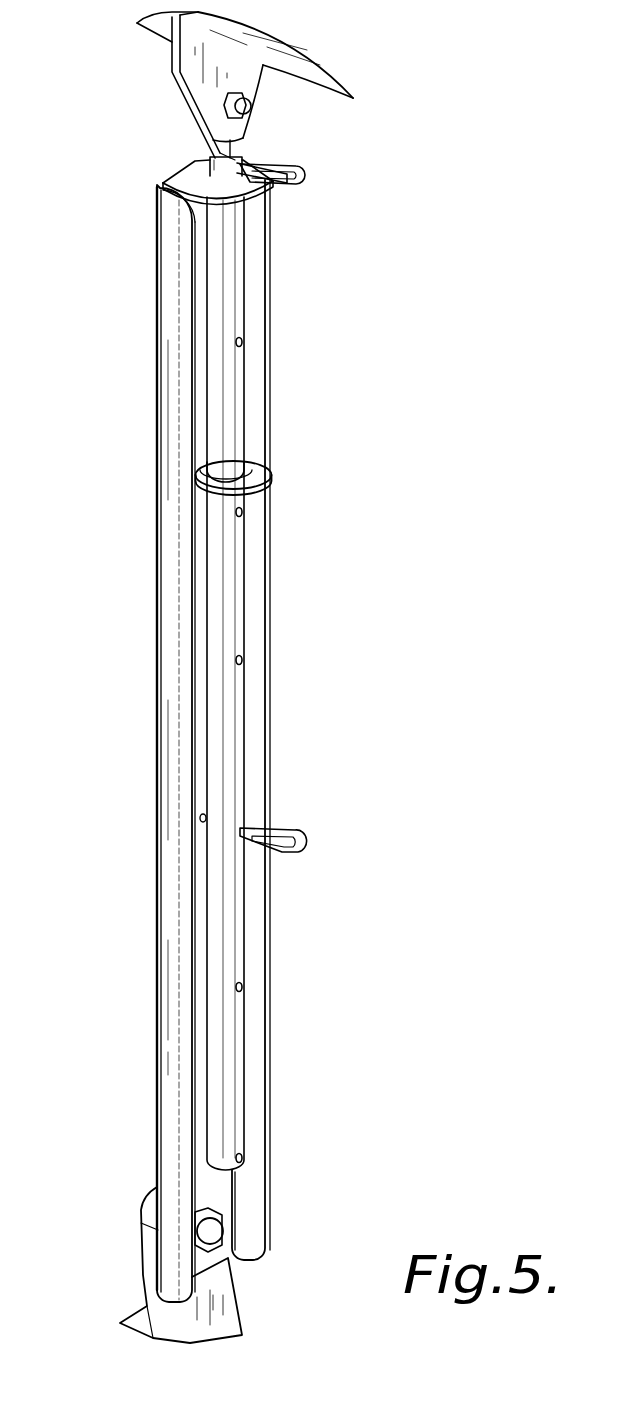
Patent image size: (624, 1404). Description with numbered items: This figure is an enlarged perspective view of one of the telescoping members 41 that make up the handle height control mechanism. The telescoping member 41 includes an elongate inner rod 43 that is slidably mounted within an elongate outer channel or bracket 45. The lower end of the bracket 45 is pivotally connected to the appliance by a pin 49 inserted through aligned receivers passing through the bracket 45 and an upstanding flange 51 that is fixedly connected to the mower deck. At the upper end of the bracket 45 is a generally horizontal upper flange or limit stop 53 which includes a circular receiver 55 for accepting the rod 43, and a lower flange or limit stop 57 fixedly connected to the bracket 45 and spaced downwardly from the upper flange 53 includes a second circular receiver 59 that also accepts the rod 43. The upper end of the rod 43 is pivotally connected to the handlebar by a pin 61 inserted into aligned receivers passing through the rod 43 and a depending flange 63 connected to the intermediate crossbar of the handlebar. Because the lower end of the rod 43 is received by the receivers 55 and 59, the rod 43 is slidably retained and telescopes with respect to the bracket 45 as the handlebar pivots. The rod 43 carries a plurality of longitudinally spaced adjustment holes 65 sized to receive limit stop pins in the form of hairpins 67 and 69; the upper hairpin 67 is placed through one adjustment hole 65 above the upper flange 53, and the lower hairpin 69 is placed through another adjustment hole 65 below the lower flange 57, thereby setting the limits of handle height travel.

The telescoping member 41 is at (134, 717).
The rod 43 is at (247, 417).
The bracket 45 is at (267, 288).
The pin 49 is at (223, 1231).
The upstanding flange 51 is at (207, 1315).
The upper flange 53 is at (260, 157).
The circular receiver 55 is at (197, 158).
The lower flange 57 is at (270, 472).
The circular receiver 59 is at (228, 477).
The pin 61 is at (251, 108).
The depending flange 63 is at (172, 55).
The adjustment holes 65 is at (243, 342).
The upper hairpin 67 is at (307, 180).
The lower hairpin 69 is at (310, 838).